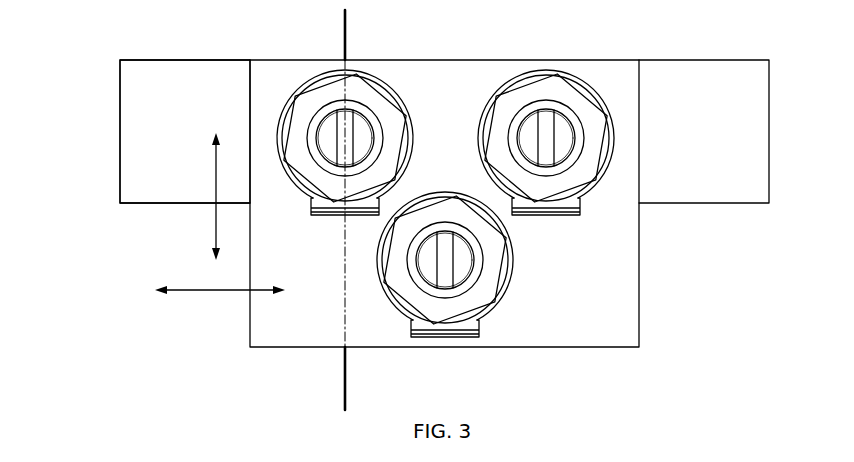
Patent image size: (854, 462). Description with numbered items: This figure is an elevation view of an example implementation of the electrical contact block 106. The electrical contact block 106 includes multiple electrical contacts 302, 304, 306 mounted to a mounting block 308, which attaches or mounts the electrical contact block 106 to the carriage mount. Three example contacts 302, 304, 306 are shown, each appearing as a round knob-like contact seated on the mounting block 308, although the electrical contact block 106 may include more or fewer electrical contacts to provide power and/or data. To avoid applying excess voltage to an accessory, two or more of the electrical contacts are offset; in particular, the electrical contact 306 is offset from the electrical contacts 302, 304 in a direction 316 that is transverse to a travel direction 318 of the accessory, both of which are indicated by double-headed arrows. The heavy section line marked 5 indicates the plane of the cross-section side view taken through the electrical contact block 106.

The electrical contact block 106 is at (92, 35).
The mounting block 308 is at (133, 92).
The electrical contact 302 is at (298, 75).
The electrical contact 304 is at (490, 75).
The electrical contact 306 is at (517, 317).
The direction 316 is at (216, 165).
The travel direction 318 is at (207, 289).
The section line 5- 5 is at (333, 33).